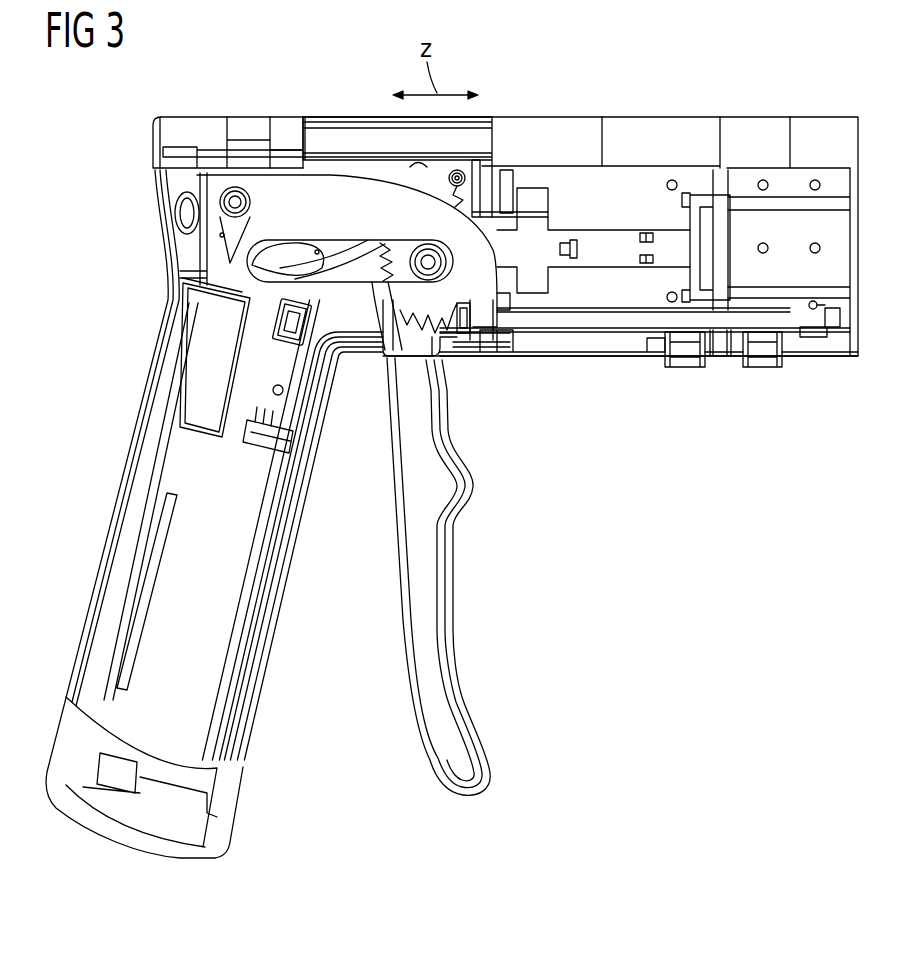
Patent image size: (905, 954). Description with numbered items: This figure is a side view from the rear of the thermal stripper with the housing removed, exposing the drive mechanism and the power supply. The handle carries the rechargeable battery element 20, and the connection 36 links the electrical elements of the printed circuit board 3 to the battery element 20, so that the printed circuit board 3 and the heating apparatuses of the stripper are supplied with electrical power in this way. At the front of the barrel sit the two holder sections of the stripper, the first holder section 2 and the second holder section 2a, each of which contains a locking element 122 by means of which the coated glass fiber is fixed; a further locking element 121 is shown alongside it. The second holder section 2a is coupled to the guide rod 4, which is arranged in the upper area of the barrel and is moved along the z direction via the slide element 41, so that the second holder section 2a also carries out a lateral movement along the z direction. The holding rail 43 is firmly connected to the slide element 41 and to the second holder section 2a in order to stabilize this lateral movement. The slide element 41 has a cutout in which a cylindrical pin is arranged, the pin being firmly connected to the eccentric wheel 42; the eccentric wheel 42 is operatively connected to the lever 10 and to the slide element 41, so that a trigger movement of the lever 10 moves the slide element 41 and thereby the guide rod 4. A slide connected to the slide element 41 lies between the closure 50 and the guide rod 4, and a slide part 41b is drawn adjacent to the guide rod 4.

The second holder section 2a is at (822, 141).
The first holder section 2 is at (554, 344).
The printed circuit board 3 is at (357, 325).
The guide rod 4 is at (352, 137).
The lever 10 is at (427, 585).
The rechargeable battery element 20 is at (172, 367).
The connection 36 is at (272, 424).
The slide element 41 is at (240, 267).
The lever stop 41b is at (287, 133).
The eccentric wheel 42 is at (440, 307).
The holding rail 43 is at (615, 322).
The closure 50 is at (150, 142).
The contact element 121 is at (763, 364).
The locking element 122 is at (685, 364).